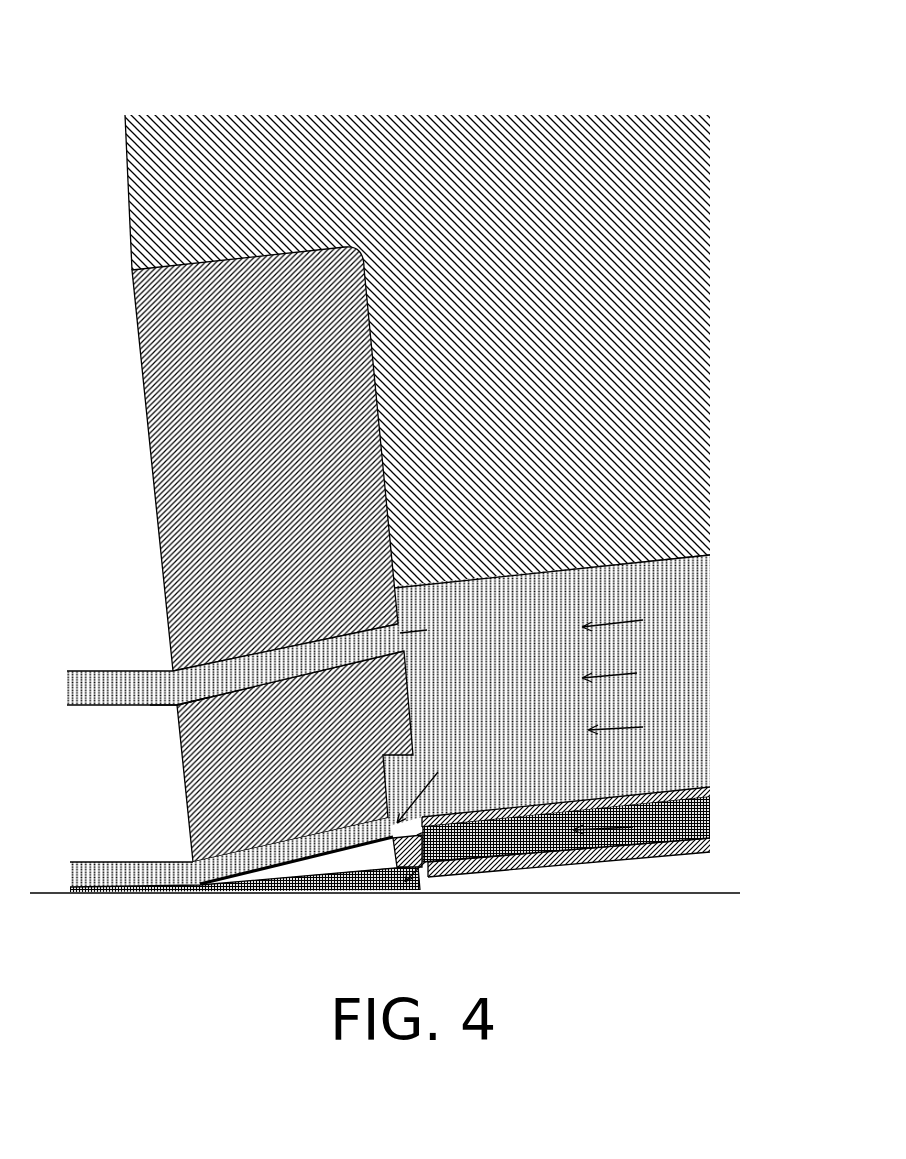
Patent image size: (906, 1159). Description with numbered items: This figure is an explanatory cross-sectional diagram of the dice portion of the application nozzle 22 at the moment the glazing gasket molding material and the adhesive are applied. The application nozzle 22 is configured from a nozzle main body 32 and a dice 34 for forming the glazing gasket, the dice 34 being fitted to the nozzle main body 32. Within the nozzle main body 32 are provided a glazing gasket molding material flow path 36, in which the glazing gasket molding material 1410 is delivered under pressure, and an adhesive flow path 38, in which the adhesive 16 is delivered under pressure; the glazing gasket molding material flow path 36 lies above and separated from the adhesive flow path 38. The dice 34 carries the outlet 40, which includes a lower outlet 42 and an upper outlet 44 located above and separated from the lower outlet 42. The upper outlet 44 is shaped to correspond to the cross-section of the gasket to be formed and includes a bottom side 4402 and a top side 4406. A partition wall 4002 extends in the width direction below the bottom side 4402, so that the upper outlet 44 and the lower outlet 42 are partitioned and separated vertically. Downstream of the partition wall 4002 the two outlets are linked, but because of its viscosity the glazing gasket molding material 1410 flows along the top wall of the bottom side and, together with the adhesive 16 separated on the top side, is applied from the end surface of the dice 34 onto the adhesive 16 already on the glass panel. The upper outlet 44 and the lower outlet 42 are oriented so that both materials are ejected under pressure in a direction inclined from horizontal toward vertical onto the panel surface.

The application nozzle 22 is at (285, 100).
The nozzle main body 32 is at (430, 132).
The dice 34 is at (158, 305).
The glazing gasket molding material flow path 36 is at (708, 572).
The glazing gasket molding material 1410 is at (656, 636).
The adhesive flow path 38 is at (710, 800).
The adhesive 16 is at (688, 826).
The outlet 40 is at (157, 643).
The top side 4406 is at (177, 706).
The bottom side 4402 is at (342, 830).
The partition wall 4002 is at (393, 843).
The lower outlet 42 is at (430, 905).
The upper outlet 44 is at (437, 790).